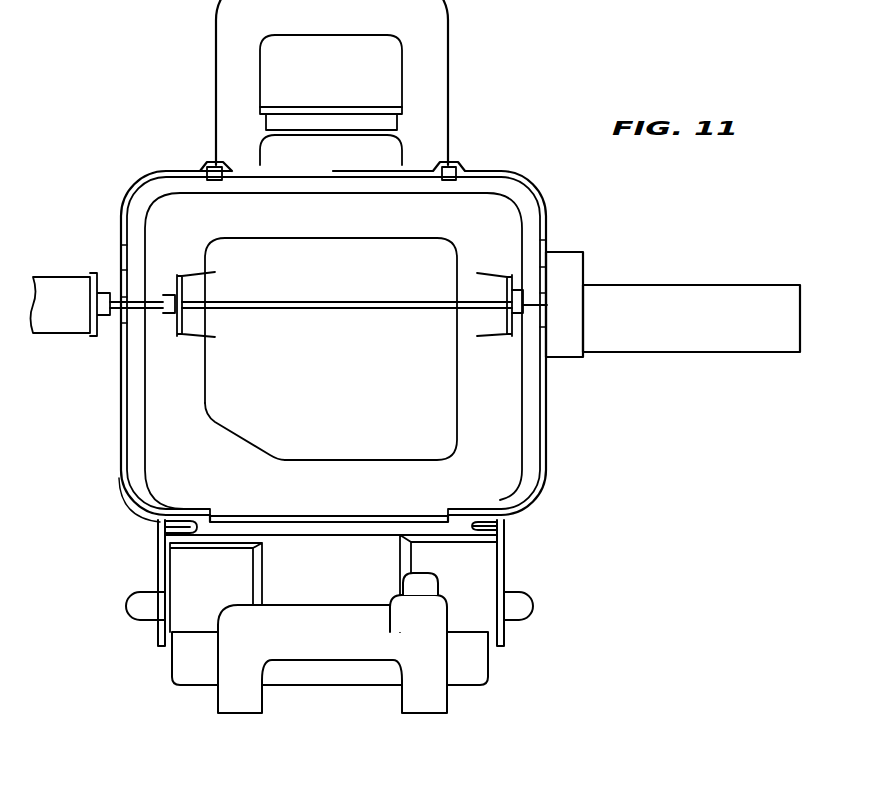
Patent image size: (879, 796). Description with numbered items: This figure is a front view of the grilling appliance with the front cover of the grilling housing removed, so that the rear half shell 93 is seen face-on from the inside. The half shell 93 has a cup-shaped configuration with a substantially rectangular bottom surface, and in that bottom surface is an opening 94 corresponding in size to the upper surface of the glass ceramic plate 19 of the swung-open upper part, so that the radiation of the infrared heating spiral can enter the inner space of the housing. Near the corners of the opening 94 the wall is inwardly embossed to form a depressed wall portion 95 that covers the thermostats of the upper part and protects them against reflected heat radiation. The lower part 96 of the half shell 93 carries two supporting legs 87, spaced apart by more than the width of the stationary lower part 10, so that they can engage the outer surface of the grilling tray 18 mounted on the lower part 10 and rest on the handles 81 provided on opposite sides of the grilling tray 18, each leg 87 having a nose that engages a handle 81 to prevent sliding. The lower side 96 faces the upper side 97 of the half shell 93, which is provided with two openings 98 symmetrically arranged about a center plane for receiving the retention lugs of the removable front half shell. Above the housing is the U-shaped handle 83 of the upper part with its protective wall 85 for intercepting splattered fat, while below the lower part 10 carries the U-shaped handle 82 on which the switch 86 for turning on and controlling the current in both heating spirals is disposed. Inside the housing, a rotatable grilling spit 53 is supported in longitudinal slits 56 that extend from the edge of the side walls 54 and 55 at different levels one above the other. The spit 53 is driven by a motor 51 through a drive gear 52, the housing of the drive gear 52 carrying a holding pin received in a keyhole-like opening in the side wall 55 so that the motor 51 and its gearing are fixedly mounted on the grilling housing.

The lower part 10 is at (490, 677).
The grilling tray 18 is at (187, 553).
The glass ceramic plate 19 is at (337, 389).
The motor 51 is at (680, 303).
The drive gear 52 is at (574, 272).
The grilling spit 53 is at (277, 308).
The side wall 54 is at (122, 384).
The side wall 55 is at (547, 426).
The longitudinal slits 56 is at (122, 258).
The handle 81 is at (145, 612).
The handle 82 is at (233, 692).
The handle 83 is at (418, 20).
The protective wall 85 is at (330, 120).
The switch 86 is at (455, 583).
The supporting legs 87 is at (153, 570).
The rear half shell 93 is at (127, 517).
The opening 94 is at (456, 270).
The inwardly embossed wall portion 95 is at (237, 438).
The lower part of the half shell 96 is at (208, 508).
The upper side of the half shell 97 is at (354, 174).
The openings 98 is at (210, 166).